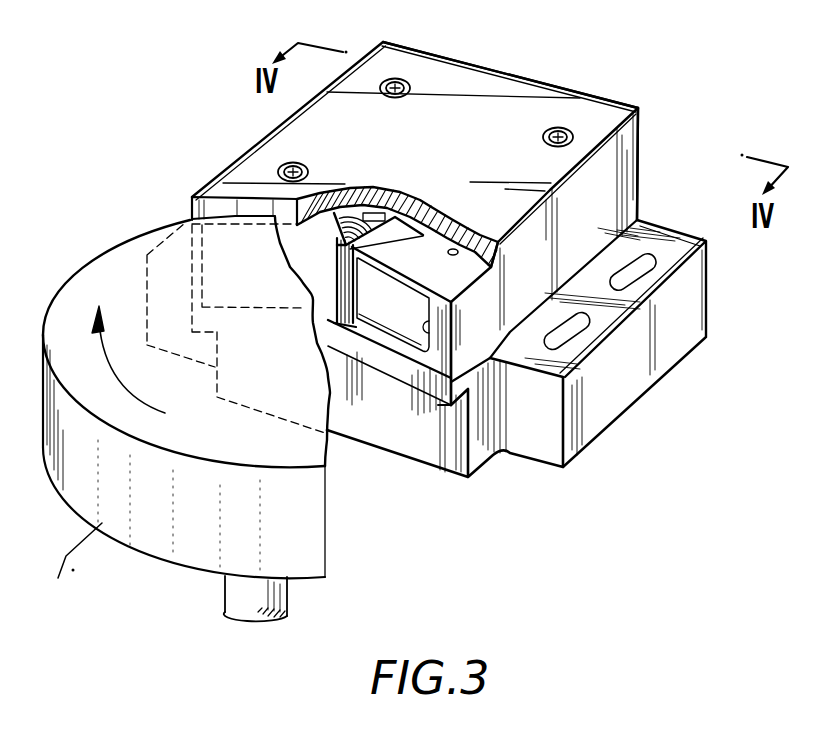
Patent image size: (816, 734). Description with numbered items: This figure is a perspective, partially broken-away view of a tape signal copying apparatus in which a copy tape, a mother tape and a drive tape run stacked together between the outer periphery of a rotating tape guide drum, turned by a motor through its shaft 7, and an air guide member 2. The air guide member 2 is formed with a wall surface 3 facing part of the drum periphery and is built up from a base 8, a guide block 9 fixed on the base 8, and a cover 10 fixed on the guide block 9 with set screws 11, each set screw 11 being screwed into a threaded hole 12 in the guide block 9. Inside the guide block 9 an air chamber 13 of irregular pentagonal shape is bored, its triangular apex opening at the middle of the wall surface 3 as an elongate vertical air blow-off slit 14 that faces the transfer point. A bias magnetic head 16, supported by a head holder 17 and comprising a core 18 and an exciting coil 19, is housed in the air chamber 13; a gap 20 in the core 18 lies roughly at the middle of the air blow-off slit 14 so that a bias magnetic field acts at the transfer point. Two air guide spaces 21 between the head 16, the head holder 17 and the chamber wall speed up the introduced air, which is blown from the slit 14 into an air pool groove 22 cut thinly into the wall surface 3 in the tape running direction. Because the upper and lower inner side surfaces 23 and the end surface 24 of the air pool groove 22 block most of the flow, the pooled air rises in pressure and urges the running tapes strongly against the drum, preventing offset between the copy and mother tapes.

The air guide member 2 is at (645, 182).
The wall surface 3 is at (433, 385).
The shaft 7 is at (300, 597).
The base 8 is at (702, 303).
The guide block 9 is at (633, 157).
The cover 10 is at (633, 128).
The set screws 11 is at (409, 80).
The threaded hole 12 is at (469, 240).
The air chamber 13 is at (440, 220).
The air blow-off slit 14 is at (337, 268).
The bias magnetic head 16 is at (335, 213).
The head holder 17 is at (408, 217).
The core 18 is at (361, 212).
The exciting coil 19 is at (378, 206).
The gap 20 is at (333, 312).
The air guide spaces 21 is at (337, 237).
The air pool groove 22 is at (412, 337).
The upper and lower inner side surfaces 23 is at (381, 290).
The end surface 24 is at (438, 333).